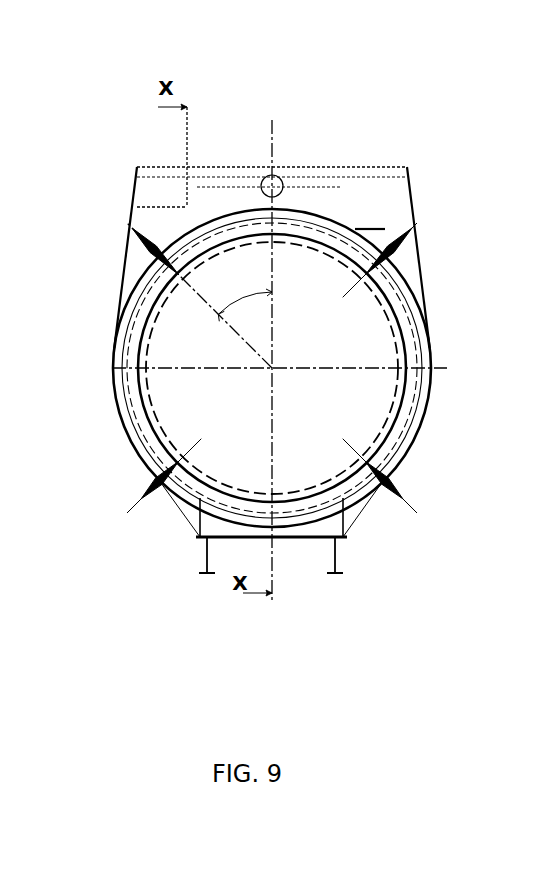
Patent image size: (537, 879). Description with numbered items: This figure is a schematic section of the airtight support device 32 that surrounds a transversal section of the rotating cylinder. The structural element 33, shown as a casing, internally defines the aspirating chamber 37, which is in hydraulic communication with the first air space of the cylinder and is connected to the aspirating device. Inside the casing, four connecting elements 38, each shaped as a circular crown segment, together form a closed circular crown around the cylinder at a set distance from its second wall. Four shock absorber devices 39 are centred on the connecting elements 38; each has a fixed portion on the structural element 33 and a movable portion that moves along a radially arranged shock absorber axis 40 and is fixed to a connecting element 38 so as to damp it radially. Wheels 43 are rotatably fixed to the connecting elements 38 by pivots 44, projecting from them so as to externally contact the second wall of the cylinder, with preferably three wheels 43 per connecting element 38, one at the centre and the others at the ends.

The airtight support device 32 is at (352, 168).
The structural element 33 is at (392, 192).
The aspirating chamber 37 is at (369, 216).
The connecting element 38 is at (195, 480).
The shock absorber device 39 is at (385, 255).
The shock absorber axis 40 is at (348, 292).
The wheel 43 is at (264, 235).
The pivot 44 is at (392, 425).